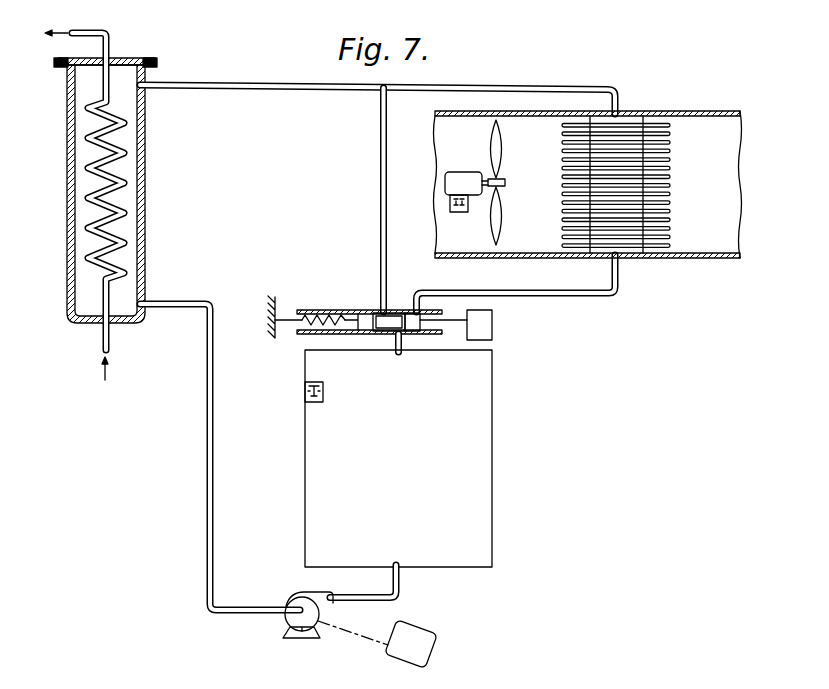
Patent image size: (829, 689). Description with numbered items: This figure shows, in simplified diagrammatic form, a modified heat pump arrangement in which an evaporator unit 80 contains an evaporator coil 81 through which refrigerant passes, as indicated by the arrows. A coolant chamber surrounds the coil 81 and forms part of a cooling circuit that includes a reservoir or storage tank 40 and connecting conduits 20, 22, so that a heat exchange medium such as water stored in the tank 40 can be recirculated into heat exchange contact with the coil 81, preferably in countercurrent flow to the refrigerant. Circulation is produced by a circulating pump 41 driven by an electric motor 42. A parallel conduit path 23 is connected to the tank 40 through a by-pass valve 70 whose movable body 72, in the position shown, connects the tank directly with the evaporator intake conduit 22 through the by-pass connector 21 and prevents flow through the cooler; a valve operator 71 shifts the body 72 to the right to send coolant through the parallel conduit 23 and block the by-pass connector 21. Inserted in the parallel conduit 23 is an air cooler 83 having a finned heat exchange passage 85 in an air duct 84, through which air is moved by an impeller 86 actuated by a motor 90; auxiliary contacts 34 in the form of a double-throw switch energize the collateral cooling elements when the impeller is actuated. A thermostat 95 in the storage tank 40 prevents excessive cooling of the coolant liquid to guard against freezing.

The evaporator unit 80 is at (125, 61).
The evaporator coil 81 is at (122, 165).
The connecting conduit 20 is at (207, 475).
The by-pass connector 21 is at (380, 174).
The evaporator intake conduit 22 is at (441, 84).
The parallel conduit path 23 is at (611, 294).
The air cooler 83 is at (698, 113).
The air duct 84 is at (683, 259).
The finned heat exchange passage 85 is at (665, 158).
The impeller 86 is at (500, 150).
The motor 90 is at (460, 177).
The auxiliary contacts 34 is at (452, 213).
The by-pass valve 70 is at (404, 312).
The valve operator 71 is at (492, 329).
The movable body 72 is at (370, 318).
The storage tank 40 is at (482, 455).
The thermostat 95 is at (323, 392).
The circulating pump 41 is at (288, 621).
The electric motor 42 is at (427, 653).